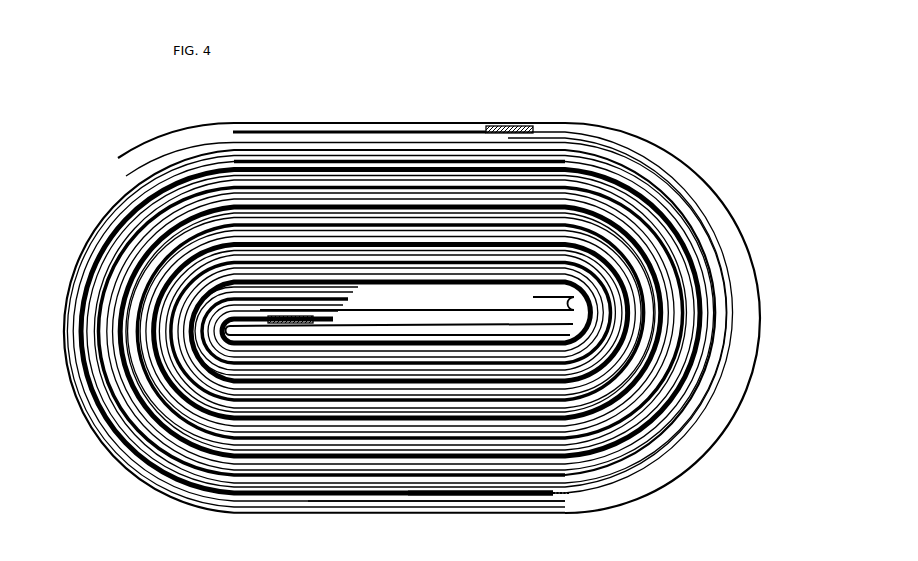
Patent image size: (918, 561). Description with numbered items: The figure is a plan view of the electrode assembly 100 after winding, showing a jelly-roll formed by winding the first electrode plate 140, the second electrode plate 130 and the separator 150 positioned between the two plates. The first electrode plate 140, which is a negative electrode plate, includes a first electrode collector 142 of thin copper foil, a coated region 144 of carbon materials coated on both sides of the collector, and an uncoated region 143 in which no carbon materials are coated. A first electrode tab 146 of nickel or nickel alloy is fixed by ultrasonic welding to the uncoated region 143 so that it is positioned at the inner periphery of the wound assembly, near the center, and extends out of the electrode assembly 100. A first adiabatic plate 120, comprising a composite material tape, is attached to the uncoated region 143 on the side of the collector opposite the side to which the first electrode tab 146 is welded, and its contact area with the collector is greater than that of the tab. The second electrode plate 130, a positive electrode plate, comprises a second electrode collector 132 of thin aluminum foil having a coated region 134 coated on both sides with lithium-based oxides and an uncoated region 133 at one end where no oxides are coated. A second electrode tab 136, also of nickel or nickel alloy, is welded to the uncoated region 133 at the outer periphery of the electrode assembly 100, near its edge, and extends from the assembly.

The electrode assembly 100 is at (444, 315).
The first adiabatic plate 120 is at (285, 301).
The second electrode plate 130 is at (398, 300).
The second electrode collector 132 is at (612, 158).
The uncoated region 133 is at (553, 121).
The coated region 134 is at (648, 168).
The second electrode tab 136 is at (498, 117).
The first electrode plate 140 is at (390, 357).
The first electrode collector 142 is at (513, 490).
The uncoated region 143 is at (548, 490).
The coated region 144 is at (397, 494).
The first electrode tab 146 is at (306, 311).
The separator 150 is at (592, 117).